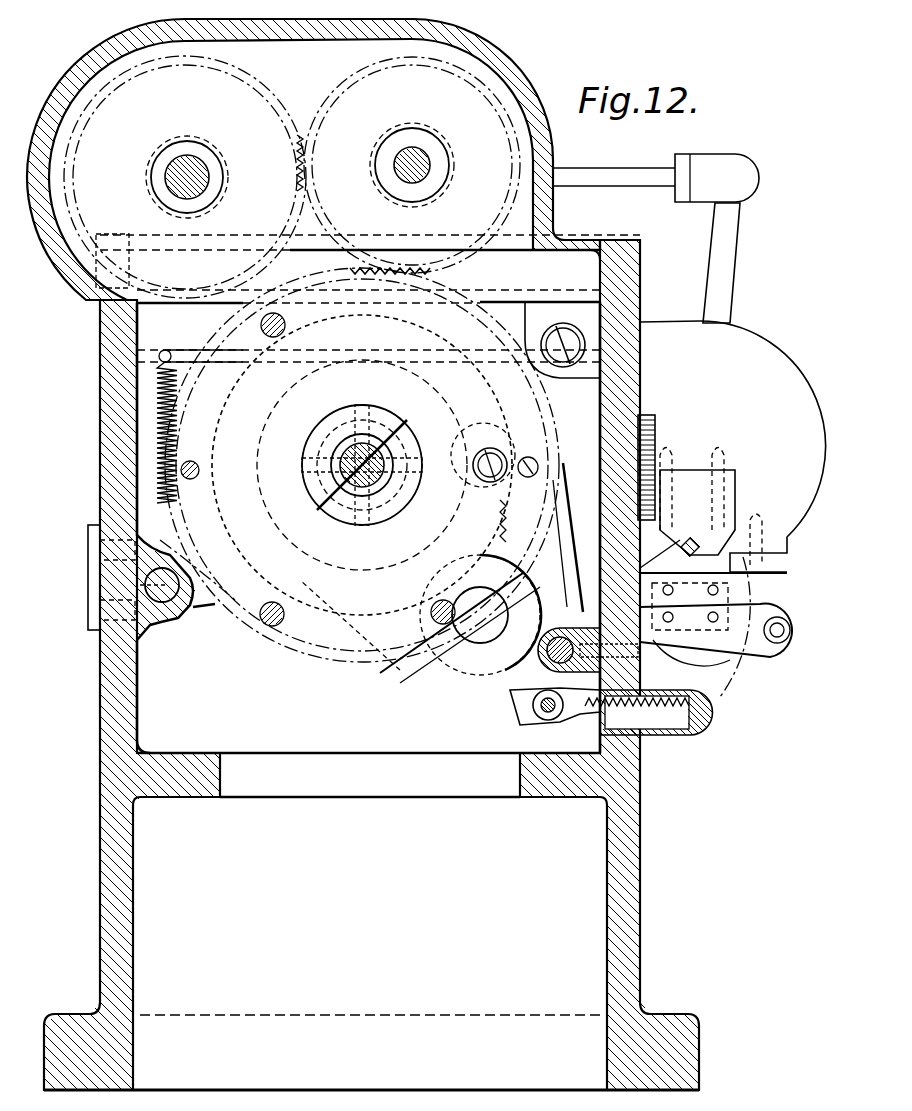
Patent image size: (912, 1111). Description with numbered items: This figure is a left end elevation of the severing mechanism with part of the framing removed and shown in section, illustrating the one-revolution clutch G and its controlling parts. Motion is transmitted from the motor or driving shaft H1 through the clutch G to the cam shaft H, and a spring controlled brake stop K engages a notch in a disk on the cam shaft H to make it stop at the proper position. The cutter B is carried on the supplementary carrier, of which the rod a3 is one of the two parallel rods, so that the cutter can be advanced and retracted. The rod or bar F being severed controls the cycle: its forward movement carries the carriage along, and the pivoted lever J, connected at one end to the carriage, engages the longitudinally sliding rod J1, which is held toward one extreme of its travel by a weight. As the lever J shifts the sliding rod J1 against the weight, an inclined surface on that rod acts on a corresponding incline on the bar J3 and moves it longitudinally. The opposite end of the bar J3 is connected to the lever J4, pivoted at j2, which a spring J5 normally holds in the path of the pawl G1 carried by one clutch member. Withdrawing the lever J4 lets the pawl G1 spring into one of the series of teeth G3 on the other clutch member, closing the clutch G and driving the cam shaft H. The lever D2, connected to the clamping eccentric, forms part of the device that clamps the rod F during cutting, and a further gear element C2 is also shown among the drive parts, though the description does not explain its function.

The cutter B is at (722, 692).
The lever D2 is at (724, 272).
The driving shaft H1 is at (195, 180).
The brake stop K is at (372, 368).
The one-revolution clutch G is at (362, 467).
The cam shaft H is at (338, 482).
The pinion gear C2 is at (432, 440).
The teeth G3 is at (575, 395).
The pawl G1 is at (640, 412).
The lever J4 is at (515, 720).
The rod or bar F is at (700, 540).
The pivot j2 is at (145, 583).
The sliding rod J1 is at (160, 585).
The pivoted lever J is at (210, 608).
The bar J3 is at (450, 668).
The rod of supplementary carrier a3 is at (790, 633).
The spring J5 is at (590, 712).